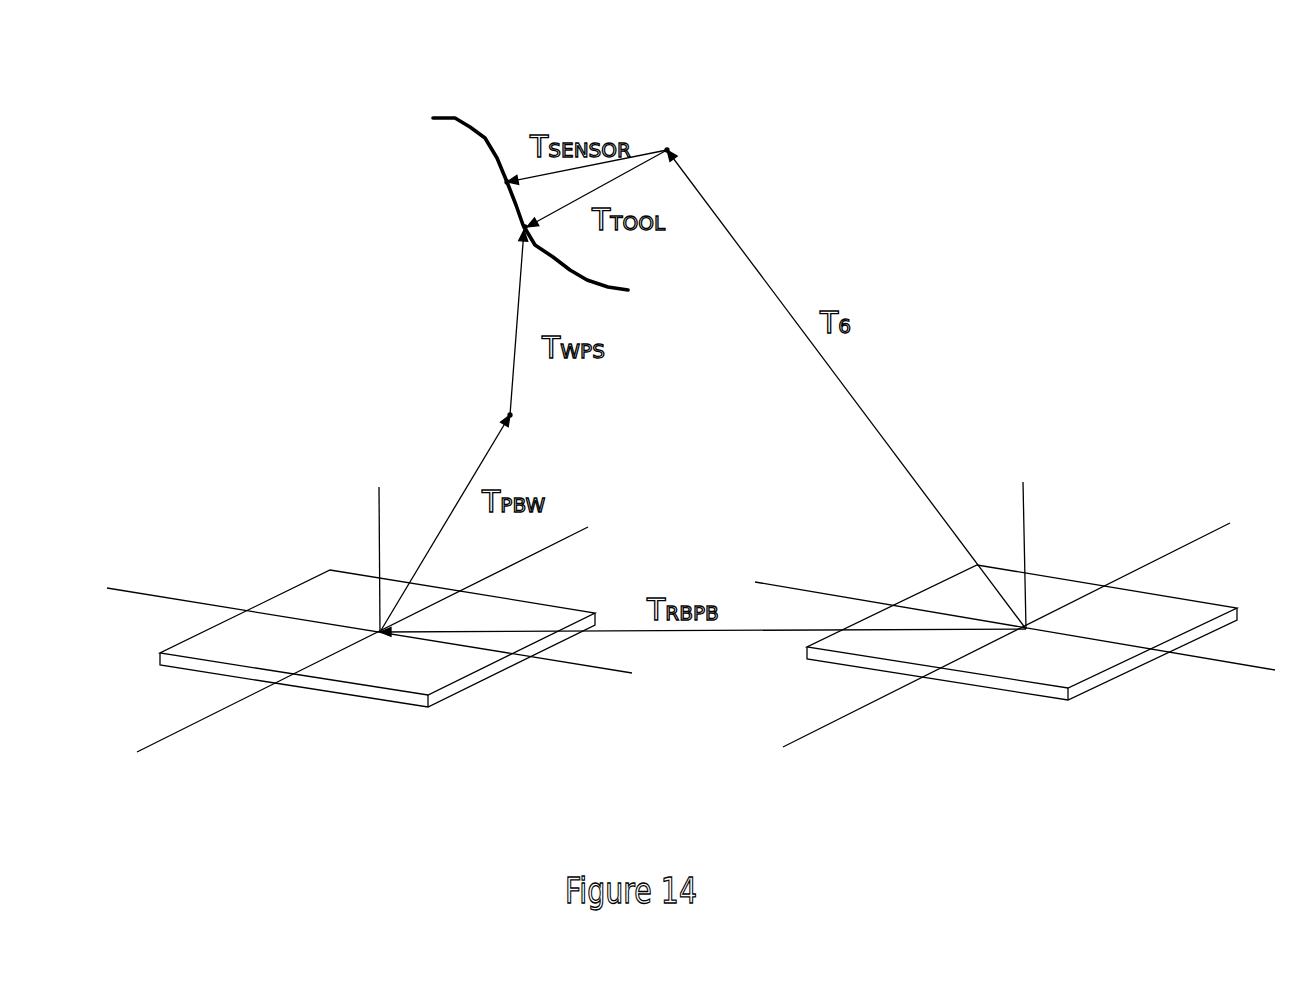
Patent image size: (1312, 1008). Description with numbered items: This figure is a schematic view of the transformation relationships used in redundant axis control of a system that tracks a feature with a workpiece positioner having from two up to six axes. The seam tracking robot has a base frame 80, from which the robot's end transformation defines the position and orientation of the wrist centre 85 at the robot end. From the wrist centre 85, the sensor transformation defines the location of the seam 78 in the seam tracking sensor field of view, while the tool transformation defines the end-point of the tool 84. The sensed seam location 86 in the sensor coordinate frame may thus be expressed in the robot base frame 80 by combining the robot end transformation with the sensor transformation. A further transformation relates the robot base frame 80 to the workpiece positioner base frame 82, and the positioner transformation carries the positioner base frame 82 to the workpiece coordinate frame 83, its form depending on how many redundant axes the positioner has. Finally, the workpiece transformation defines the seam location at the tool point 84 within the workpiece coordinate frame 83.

The seam 78 is at (488, 137).
The seam tracking robot base frame 80 is at (1026, 629).
The workpiece positioner base frame 82 is at (380, 632).
The workpiece coordinate frame 83 is at (512, 418).
The tool end-point 84 is at (525, 227).
The wrist centre 85 is at (667, 150).
The sensed seam location 86 is at (505, 183).